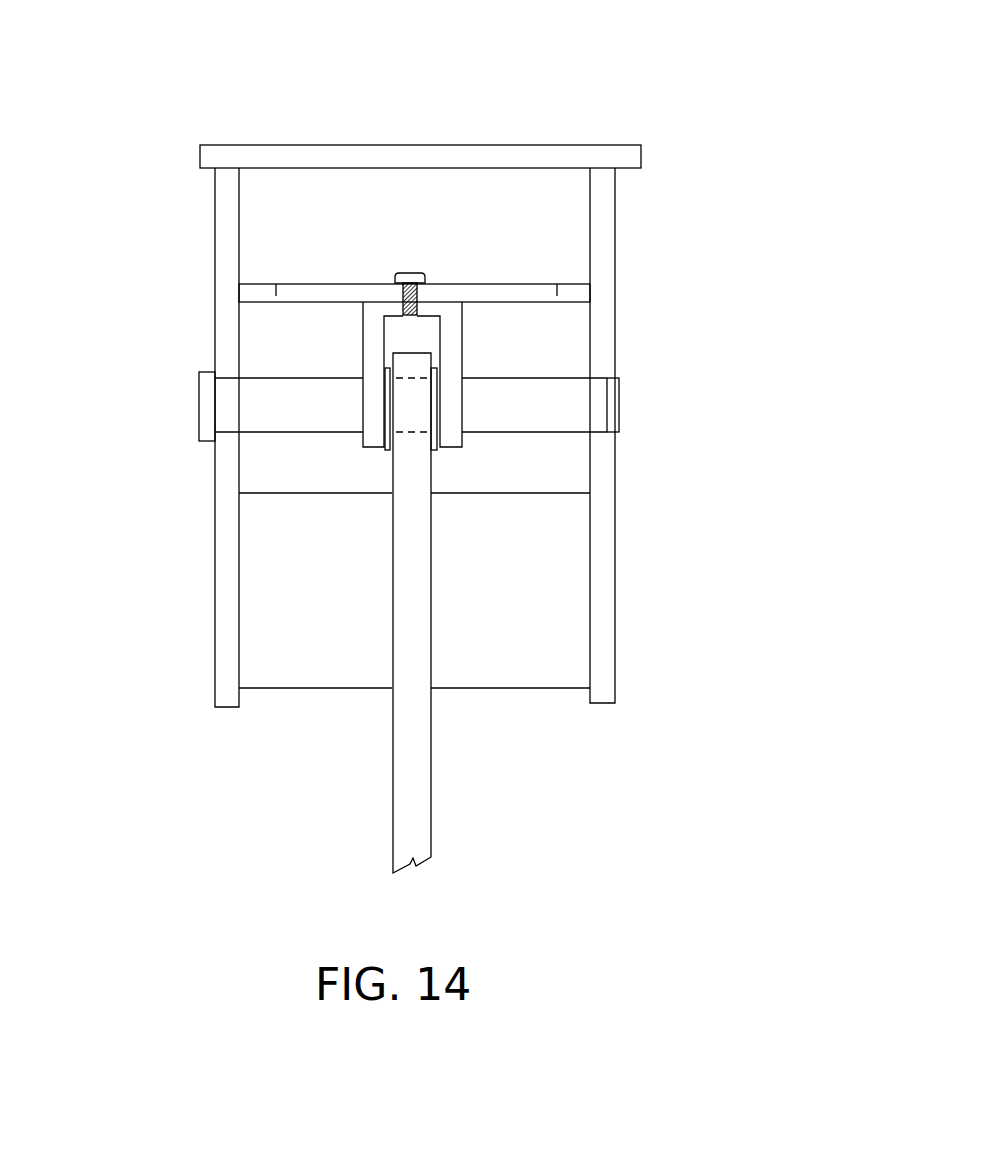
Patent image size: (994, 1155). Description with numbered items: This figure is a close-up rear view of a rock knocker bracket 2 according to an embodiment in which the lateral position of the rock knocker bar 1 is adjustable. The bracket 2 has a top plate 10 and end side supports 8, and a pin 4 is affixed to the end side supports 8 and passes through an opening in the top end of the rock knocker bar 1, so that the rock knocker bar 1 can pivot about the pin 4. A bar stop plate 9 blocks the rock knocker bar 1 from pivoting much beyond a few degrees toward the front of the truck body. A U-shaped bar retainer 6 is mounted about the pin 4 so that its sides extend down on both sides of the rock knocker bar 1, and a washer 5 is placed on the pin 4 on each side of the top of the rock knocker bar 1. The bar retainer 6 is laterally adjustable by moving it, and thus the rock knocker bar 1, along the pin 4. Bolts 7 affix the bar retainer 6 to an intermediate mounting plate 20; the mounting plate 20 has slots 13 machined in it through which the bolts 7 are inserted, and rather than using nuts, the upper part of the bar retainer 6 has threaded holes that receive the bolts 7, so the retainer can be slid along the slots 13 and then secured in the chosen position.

The rock knocker bar 1 is at (407, 828).
The rock knocker bracket 2 is at (273, 121).
The pin 4 is at (523, 418).
The washer 5 is at (440, 377).
The bar retainer 6 is at (380, 355).
The bolts 7 is at (407, 272).
The end side supports 8 is at (228, 620).
The bar stop plate 9 is at (503, 645).
The top plate 10 is at (517, 158).
The slots 13 is at (479, 293).
The intermediate mounting plate 20 is at (580, 295).